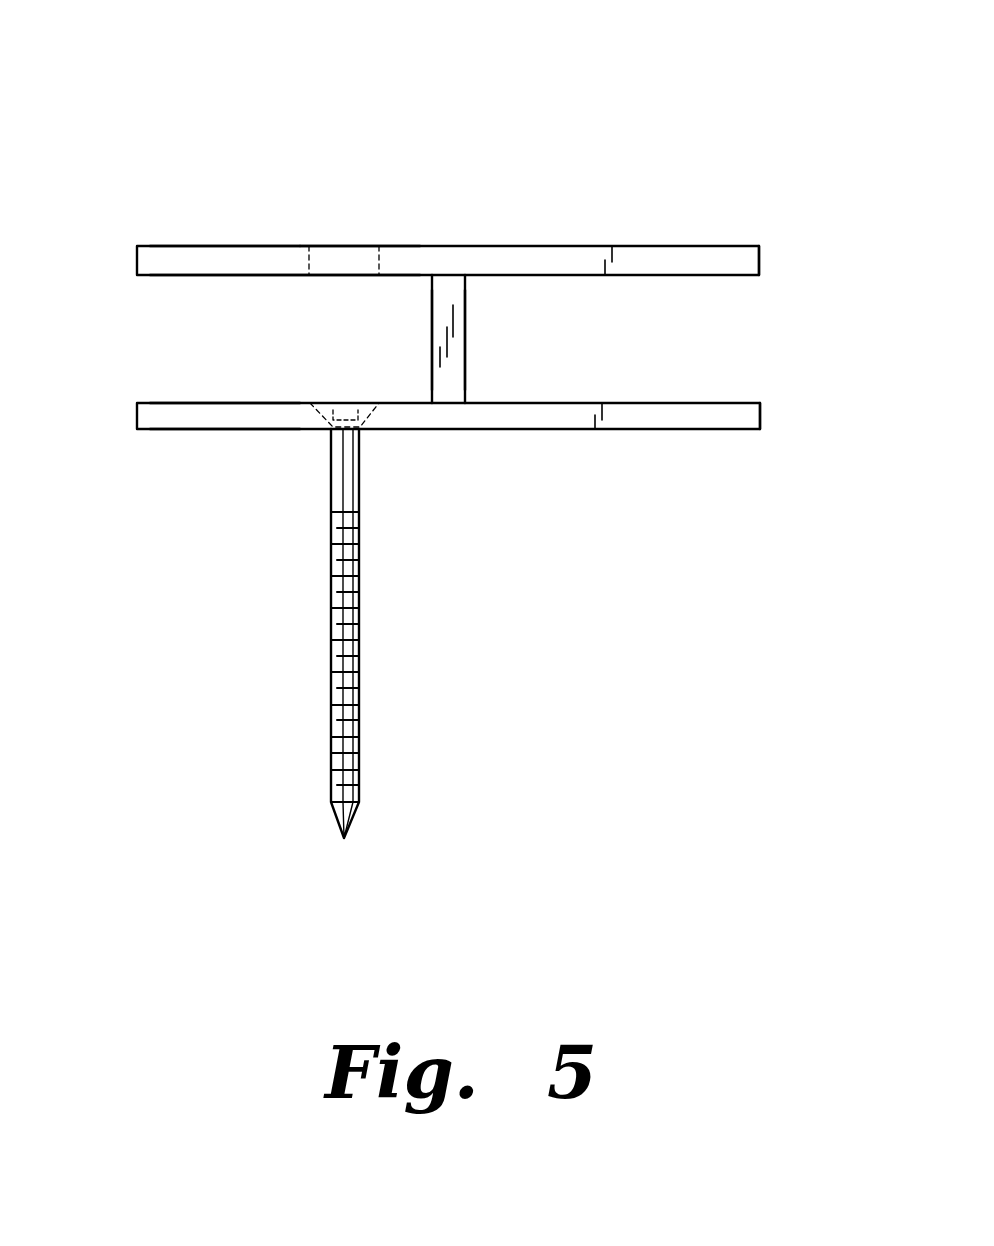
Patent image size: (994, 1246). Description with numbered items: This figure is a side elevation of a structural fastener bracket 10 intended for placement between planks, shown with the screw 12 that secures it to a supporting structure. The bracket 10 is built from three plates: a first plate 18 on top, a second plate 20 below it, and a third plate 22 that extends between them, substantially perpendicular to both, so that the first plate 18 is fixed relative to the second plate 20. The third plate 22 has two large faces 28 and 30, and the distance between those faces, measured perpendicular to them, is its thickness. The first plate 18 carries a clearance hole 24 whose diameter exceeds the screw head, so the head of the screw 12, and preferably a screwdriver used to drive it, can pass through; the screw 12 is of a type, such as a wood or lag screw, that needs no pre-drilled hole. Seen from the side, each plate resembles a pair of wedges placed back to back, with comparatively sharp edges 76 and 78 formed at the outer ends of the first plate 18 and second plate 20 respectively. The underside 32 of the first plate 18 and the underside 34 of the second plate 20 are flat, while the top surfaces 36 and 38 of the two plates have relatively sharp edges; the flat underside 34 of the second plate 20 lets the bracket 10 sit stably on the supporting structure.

The structural fastener bracket 10 is at (553, 138).
The screw 12 is at (331, 620).
The first plate 18 is at (647, 246).
The second plate 20 is at (655, 403).
The third plate 22 is at (512, 307).
The clearance hole 24 is at (362, 262).
The face of third plate 28 is at (466, 355).
The face of third plate 30 is at (432, 311).
The underside of first plate 32 is at (253, 275).
The underside of second plate 34 is at (220, 430).
The top surface of first plate 36 is at (210, 246).
The top surface of second plate 38 is at (185, 403).
The sharp edge of first plate 76 is at (760, 257).
The sharp edge of second plate 78 is at (760, 410).